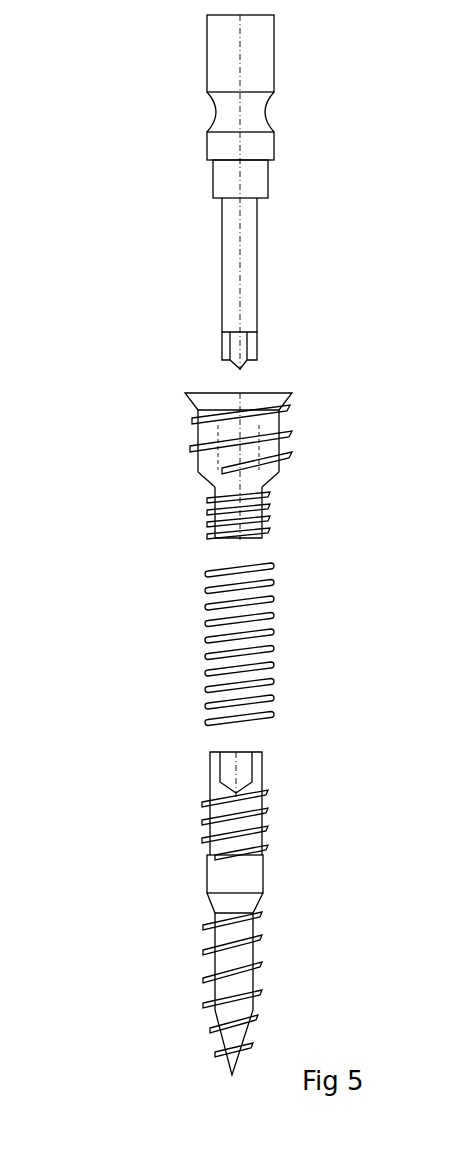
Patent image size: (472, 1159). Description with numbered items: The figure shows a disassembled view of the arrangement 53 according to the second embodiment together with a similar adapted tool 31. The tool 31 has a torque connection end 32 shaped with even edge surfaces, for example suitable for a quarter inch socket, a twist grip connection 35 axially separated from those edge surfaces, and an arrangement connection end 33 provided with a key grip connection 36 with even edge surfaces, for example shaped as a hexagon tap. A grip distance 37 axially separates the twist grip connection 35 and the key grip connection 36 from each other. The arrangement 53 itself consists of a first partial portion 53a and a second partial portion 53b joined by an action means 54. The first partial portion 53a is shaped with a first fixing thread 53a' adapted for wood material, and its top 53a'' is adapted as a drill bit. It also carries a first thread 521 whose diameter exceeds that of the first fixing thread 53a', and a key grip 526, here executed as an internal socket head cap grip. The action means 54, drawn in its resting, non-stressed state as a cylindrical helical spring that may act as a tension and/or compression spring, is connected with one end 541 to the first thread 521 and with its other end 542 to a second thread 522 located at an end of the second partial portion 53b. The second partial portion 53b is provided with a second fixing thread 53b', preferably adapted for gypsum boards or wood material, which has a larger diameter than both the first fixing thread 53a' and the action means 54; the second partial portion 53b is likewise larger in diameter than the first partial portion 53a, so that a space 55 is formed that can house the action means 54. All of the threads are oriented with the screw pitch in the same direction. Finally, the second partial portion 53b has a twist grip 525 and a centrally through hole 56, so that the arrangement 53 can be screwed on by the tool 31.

The tool 31 is at (254, 192).
The torque connection end 32 is at (268, 60).
The arrangement connection end 33 is at (244, 264).
The twist grip connection 35 is at (232, 181).
The key grip connection 36 is at (222, 347).
The grip distance 37 is at (240, 275).
The arrangement 53 is at (259, 463).
The twist grip 525 is at (235, 396).
The second fixing thread 53b' is at (292, 439).
The centrally through hole 56 is at (235, 453).
The second partial portion 53b is at (297, 509).
The space 55 is at (203, 490).
The second thread 522 is at (265, 522).
The action means 54 is at (291, 655).
The other end of action means 542 is at (278, 572).
The end of action means 541 is at (278, 718).
The first partial portion 53a is at (209, 913).
The key grip 526 is at (225, 770).
The first thread 521 is at (264, 828).
The first fixing thread 53a' is at (288, 972).
The top 53a'' is at (192, 1054).